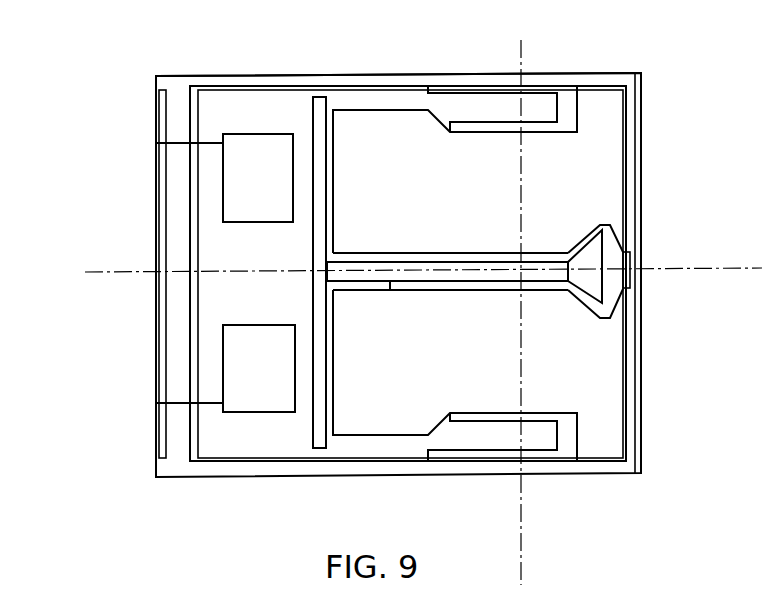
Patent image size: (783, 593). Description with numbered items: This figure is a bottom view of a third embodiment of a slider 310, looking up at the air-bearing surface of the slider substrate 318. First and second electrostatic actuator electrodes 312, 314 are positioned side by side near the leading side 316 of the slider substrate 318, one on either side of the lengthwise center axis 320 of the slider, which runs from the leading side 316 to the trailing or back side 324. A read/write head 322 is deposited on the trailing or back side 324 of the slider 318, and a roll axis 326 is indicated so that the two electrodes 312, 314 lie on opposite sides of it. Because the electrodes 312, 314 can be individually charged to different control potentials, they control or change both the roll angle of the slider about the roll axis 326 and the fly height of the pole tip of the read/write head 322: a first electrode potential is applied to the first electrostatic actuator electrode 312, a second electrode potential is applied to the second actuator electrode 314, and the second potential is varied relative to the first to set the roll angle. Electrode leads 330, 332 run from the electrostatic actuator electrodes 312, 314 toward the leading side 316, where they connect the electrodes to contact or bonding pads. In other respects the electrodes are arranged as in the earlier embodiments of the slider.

The slider 310 is at (190, 514).
The first electrostatic actuator electrode 312 is at (240, 370).
The second electrostatic actuator electrode 314 is at (255, 195).
The leading side 316 is at (156, 192).
The slider substrate 318 is at (450, 73).
The center axis 320 is at (521, 40).
The read/write head 322 is at (631, 277).
The trailing side 324 is at (624, 363).
The roll axis 326 is at (655, 268).
The electrode lead 330 is at (181, 404).
The electrode lead 332 is at (177, 140).